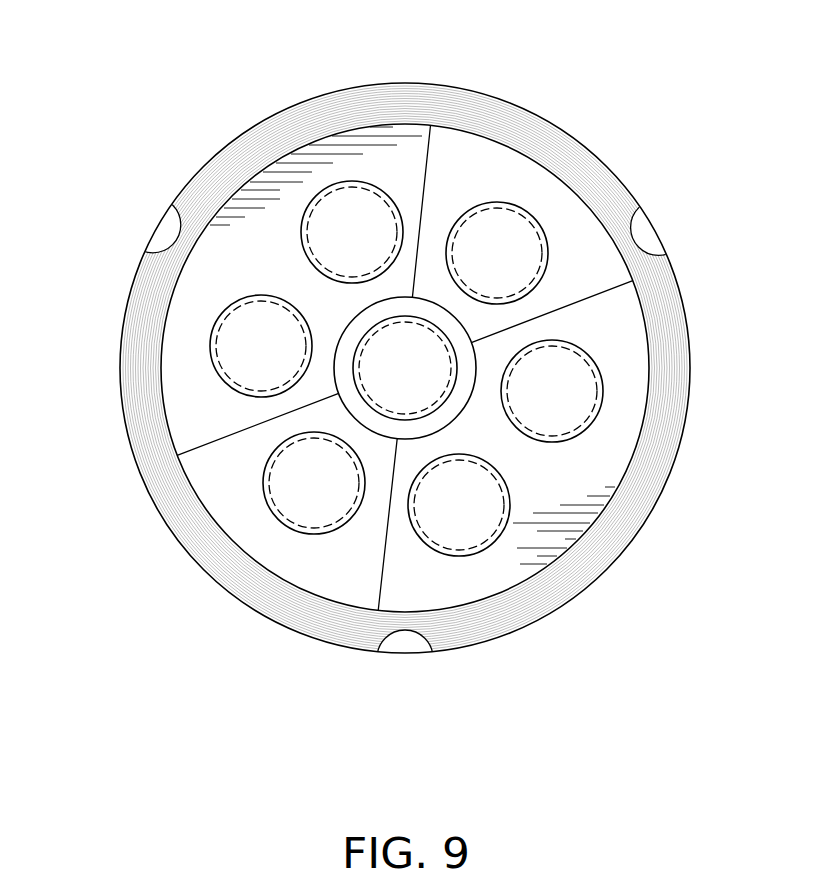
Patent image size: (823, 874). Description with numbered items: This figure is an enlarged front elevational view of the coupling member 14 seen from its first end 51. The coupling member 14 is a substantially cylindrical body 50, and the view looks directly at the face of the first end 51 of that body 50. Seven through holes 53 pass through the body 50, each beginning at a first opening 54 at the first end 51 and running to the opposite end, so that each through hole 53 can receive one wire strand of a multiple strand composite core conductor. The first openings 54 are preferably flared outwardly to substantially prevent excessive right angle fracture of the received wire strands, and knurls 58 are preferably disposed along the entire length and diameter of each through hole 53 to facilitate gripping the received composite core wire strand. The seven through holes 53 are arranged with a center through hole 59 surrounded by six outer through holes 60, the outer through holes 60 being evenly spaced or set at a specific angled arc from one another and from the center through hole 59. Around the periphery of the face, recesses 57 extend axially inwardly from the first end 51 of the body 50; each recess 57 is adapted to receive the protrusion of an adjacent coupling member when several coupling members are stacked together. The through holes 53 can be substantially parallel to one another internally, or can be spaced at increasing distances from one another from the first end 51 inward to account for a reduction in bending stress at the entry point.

The coupling member 14 is at (397, 370).
The cylindrical body 50 is at (389, 370).
The first end 51 is at (263, 197).
The through hole 53 is at (352, 205).
The first opening 54 is at (537, 212).
The recess 57 is at (178, 235).
The knurls 58 is at (272, 303).
The center through hole 59 is at (447, 400).
The outer through holes 60 is at (210, 350).